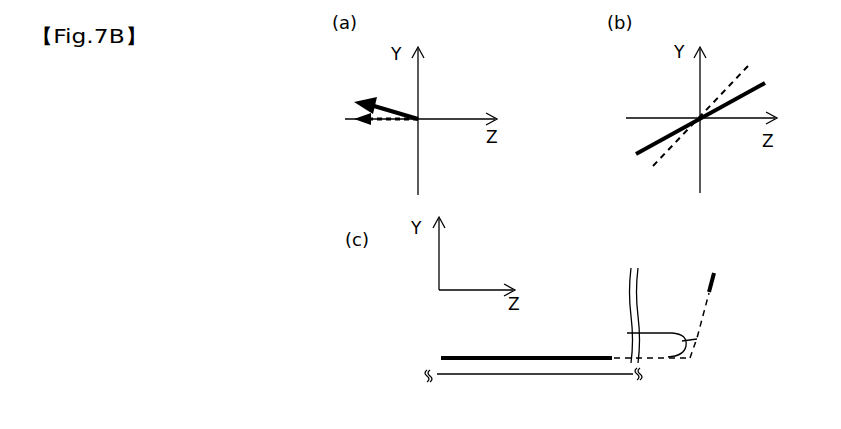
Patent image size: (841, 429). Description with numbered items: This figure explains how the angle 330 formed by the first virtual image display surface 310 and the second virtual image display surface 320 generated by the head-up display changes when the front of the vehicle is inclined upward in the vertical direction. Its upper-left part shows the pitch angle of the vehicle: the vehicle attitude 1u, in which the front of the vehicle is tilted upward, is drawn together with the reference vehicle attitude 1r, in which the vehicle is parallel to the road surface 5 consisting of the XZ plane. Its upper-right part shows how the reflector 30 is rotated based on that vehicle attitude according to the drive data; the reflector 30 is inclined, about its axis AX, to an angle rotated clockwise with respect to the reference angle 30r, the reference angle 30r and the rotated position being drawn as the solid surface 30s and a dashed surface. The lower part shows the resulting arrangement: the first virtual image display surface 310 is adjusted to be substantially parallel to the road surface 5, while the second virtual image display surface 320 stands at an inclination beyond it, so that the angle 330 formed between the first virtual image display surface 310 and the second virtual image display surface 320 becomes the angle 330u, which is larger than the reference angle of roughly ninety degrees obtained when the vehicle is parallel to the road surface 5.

The vehicle attitude 1u is at (371, 100).
The reference vehicle attitude 1r is at (386, 141).
The reflector 30 is at (727, 103).
The mirror reflective surface (reference position) 30s is at (745, 96).
The reference angle 30r is at (747, 72).
The rotation axis AX is at (704, 121).
The road surface 5 is at (436, 372).
The first virtual image display surface 310 is at (489, 357).
The second virtual image display surface 320 is at (710, 276).
The angle 330 is at (626, 333).
The angle 330u is at (627, 333).